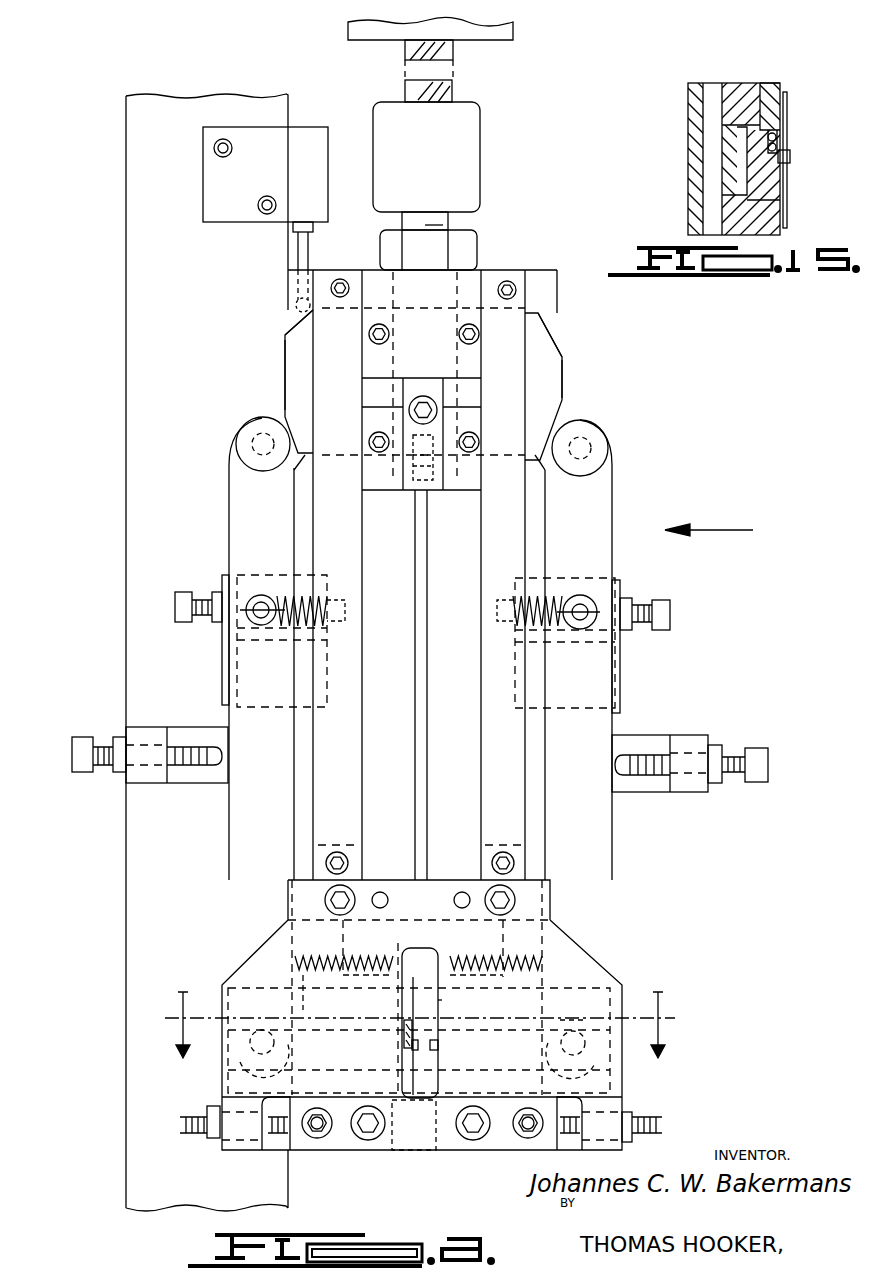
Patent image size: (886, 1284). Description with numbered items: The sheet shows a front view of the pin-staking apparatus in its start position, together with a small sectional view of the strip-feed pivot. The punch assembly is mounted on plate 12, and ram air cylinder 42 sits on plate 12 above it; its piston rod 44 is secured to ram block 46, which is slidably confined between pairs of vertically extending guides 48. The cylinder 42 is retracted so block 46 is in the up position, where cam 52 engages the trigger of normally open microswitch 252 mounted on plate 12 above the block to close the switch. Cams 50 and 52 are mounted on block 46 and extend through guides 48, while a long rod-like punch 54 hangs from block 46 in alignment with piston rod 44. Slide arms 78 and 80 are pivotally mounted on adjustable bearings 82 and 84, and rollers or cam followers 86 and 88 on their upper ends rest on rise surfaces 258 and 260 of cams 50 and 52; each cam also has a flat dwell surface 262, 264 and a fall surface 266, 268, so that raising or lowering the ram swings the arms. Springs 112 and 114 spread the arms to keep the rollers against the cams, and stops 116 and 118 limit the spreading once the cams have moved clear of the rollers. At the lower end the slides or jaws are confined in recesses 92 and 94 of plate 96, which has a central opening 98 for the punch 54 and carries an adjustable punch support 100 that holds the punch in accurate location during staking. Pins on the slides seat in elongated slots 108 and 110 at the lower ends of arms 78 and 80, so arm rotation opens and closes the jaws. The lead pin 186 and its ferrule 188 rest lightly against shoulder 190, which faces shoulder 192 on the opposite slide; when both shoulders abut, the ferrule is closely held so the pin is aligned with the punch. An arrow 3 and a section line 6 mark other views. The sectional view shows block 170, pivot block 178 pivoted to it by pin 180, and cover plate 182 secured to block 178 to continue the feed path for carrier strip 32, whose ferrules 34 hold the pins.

In FIG. 2, the plate 12 is at (128, 298).
In FIG. 2, the ram air cylinder 42 is at (512, 36).
In FIG. 2, the piston rod 44 is at (452, 95).
In FIG. 2, the ram block 46 is at (477, 285).
In FIG. 2, the guides 48 is at (490, 537).
In FIG. 2, the cam 50 is at (548, 400).
In FIG. 15, the cam 50 is at (788, 110).
In FIG. 2, the cam 52 is at (298, 385).
In FIG. 2, the punch 54 is at (415, 758).
In FIG. 2, the slide arm 78 is at (606, 836).
In FIG. 2, the slide arm 80 is at (242, 810).
In FIG. 2, the adjustable bearing 82 is at (578, 595).
In FIG. 2, the adjustable bearing 84 is at (263, 595).
In FIG. 2, the roller 86 is at (610, 445).
In FIG. 2, the roller 88 is at (245, 428).
In FIG. 2, the recess 92 is at (570, 1018).
In FIG. 2, the recess 94 is at (314, 989).
In FIG. 2, the plate 96 is at (248, 1142).
In FIG. 2, the opening 98 is at (440, 1003).
In FIG. 2, the punch support 100 is at (397, 1155).
In FIG. 2, the elongated slot 108 is at (585, 1006).
In FIG. 2, the elongated slot 110 is at (420, 1015).
In FIG. 2, the spring 112 is at (488, 946).
In FIG. 2, the spring 114 is at (388, 955).
In FIG. 2, the stop 116 is at (640, 755).
In FIG. 2, the stop 118 is at (178, 747).
In FIG. 2, the lead pin 186 is at (403, 995).
In FIG. 2, the ferrule 188 is at (440, 1055).
In FIG. 2, the shoulder 190 is at (403, 1045).
In FIG. 2, the shoulder 192 is at (445, 1040).
In FIG. 2, the microswitch 252 is at (323, 140).
In FIG. 2, the rise surface 258 is at (553, 472).
In FIG. 2, the rise surface 260 is at (294, 468).
In FIG. 2, the dwell surface 262 is at (563, 380).
In FIG. 2, the dwell surface 264 is at (283, 353).
In FIG. 2, the fall surface 266 is at (552, 323).
In FIG. 2, the fall surface 268 is at (288, 325).
In FIG. 2, the view direction arrow 3 is at (732, 536).
In FIG. 2, the section line 6 is at (418, 1025).
In FIG. 15, the block 170 is at (690, 160).
In FIG. 15, the pivot block 178 is at (762, 222).
In FIG. 15, the pin 180 is at (712, 212).
In FIG. 15, the cover plate 182 is at (760, 88).
In FIG. 15, the carrier strip 32 is at (780, 142).
In FIG. 15, the ferrules 34 is at (792, 158).